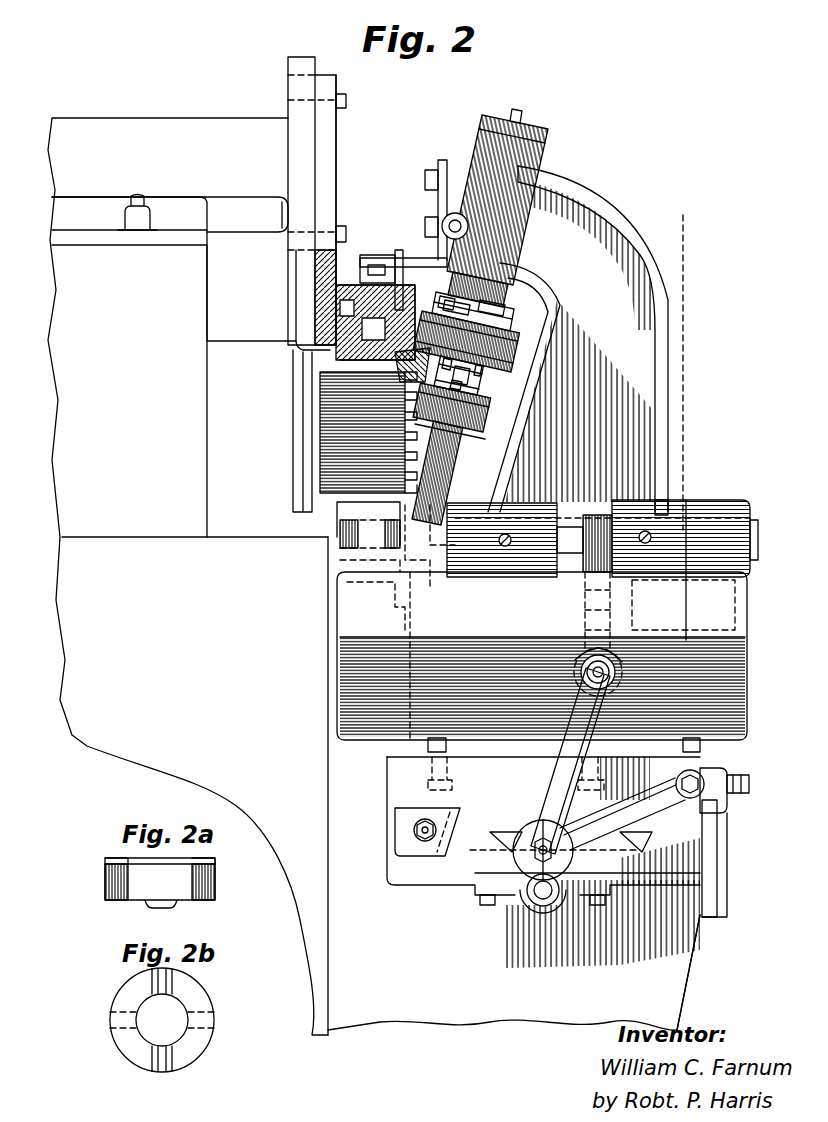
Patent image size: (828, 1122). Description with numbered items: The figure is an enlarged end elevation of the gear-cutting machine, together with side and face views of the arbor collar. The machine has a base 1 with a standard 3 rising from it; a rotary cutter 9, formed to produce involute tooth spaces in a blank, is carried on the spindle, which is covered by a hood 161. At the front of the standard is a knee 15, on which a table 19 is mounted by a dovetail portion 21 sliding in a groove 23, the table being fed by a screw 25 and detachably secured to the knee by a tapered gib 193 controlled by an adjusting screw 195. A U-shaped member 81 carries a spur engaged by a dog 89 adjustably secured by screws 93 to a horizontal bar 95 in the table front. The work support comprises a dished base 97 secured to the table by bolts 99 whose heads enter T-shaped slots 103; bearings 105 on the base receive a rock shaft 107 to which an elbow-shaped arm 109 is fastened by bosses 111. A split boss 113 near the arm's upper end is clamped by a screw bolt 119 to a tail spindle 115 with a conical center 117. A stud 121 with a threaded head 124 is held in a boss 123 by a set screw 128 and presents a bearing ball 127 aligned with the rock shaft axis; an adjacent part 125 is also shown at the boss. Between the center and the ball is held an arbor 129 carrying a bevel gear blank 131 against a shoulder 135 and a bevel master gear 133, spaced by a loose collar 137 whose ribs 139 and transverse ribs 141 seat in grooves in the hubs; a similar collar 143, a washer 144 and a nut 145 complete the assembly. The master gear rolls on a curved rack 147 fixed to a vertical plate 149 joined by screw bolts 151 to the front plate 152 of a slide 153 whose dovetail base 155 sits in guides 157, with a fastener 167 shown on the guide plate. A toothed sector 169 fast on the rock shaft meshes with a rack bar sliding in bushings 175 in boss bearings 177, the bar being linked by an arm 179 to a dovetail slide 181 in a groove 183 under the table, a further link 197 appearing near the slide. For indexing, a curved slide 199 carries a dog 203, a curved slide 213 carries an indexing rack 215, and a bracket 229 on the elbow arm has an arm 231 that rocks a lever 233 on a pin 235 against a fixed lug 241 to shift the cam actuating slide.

In FIG. 2, the base 1 is at (73, 600).
In FIG. 2, the standard 3 is at (683, 226).
In FIG. 2, the rotary cutter 9 is at (320, 468).
In FIG. 2, the knee 15 is at (655, 990).
In FIG. 2, the table 19 is at (397, 772).
In FIG. 2, the dovetail portion 21 is at (436, 875).
In FIG. 2, the groove 23 is at (472, 878).
In FIG. 2, the screw 25 is at (508, 915).
In FIG. 2, the U-shaped member 81 is at (728, 895).
In FIG. 2, the dog 89 is at (728, 869).
In FIG. 2, the screws 93 is at (752, 784).
In FIG. 2, the horizontal bar 95 is at (740, 806).
In FIG. 2, the base 97 is at (738, 648).
In FIG. 2, the bolts 99 is at (428, 743).
In FIG. 2, the T-shaped slots 103 is at (508, 776).
In FIG. 2, the bearings 105 is at (462, 515).
In FIG. 2, the rock shaft 107 is at (648, 510).
In FIG. 2, the elbow-shaped arm 109 is at (664, 322).
In FIG. 2, the bosses 111 is at (657, 498).
In FIG. 2, the boss 113 is at (548, 152).
In FIG. 2, the tail spindle 115 is at (522, 112).
In FIG. 2, the conical center 117 is at (497, 297).
In FIG. 2, the screw bolt 119 is at (468, 222).
In FIG. 2, the stud 121 is at (362, 562).
In FIG. 2, the boss 123 is at (337, 520).
In FIG. 2, the head 124 is at (342, 548).
In FIG. 2, the spring 125 is at (362, 528).
In FIG. 2, the bearing ball 127 is at (430, 550).
In FIG. 2, the set screw 128 is at (378, 656).
In FIG. 2, the arbor 129 is at (456, 447).
In FIG. 2, the bevel gear blank 131 is at (486, 422).
In FIG. 2, the bevel master gear 133 is at (512, 352).
In FIG. 2, the shoulder 135 is at (492, 400).
In FIG. 2, the loose collar 137 is at (478, 382).
In FIG. 2A, the loose collar 137 is at (210, 880).
In FIG. 2B, the loose collar 137 is at (200, 1040).
In FIG. 2, the ribs 139 is at (470, 392).
In FIG. 2A, the ribs 139 is at (168, 906).
In FIG. 2B, the ribs 139 is at (165, 982).
In FIG. 2, the transverse ribs 141 is at (475, 371).
In FIG. 2A, the transverse ribs 141 is at (194, 860).
In FIG. 2B, the transverse ribs 141 is at (118, 1012).
In FIG. 2, the collar 143 is at (505, 322).
In FIG. 2, the washer 144 is at (500, 312).
In FIG. 2, the nut 145 is at (505, 314).
In FIG. 2, the curved rack 147 is at (440, 300).
In FIG. 2, the vertical plate 149 is at (339, 152).
In FIG. 2, the screw bolts 151 is at (347, 102).
In FIG. 2, the front plate 152 is at (305, 130).
In FIG. 2, the slide 153 is at (198, 121).
In FIG. 2, the dovetail base 155 is at (235, 208).
In FIG. 2, the guides 157 is at (165, 200).
In FIG. 2, the hood 161 is at (42, 275).
In FIG. 2, the bolt 167 is at (124, 217).
In FIG. 2, the toothed sector 169 is at (592, 556).
In FIG. 2, the bushings 175 is at (618, 664).
In FIG. 2, the boss bearings 177 is at (572, 668).
In FIG. 2, the arm 179 is at (542, 772).
In FIG. 2, the dovetail slide 181 is at (528, 818).
In FIG. 2, the groove 183 is at (508, 812).
In FIG. 2, the tapered gib 193 is at (428, 808).
In FIG. 2, the adjusting screw 195 is at (414, 831).
In FIG. 2, the link 197 is at (642, 822).
In FIG. 2, the curved slide 199 is at (340, 299).
In FIG. 2, the dog 203 is at (375, 256).
In FIG. 2, the curved slide 213 is at (345, 358).
In FIG. 2, the indexing rack 215 is at (417, 365).
In FIG. 2, the bracket 229 is at (437, 199).
In FIG. 2, the arm 231 is at (418, 258).
In FIG. 2, the lever 233 is at (404, 272).
In FIG. 2, the pin 235 is at (366, 283).
In FIG. 2, the lug 241 is at (440, 305).